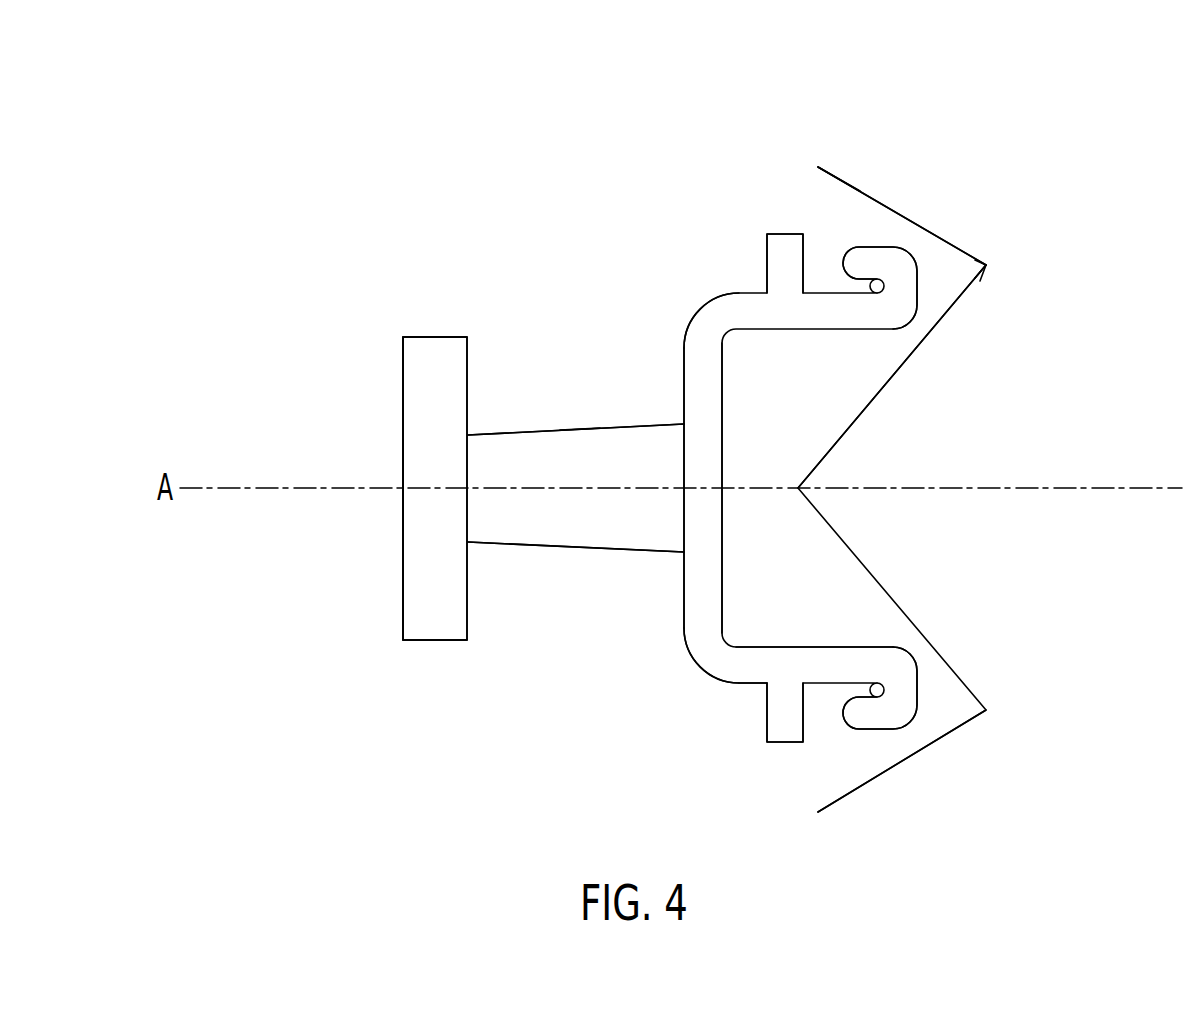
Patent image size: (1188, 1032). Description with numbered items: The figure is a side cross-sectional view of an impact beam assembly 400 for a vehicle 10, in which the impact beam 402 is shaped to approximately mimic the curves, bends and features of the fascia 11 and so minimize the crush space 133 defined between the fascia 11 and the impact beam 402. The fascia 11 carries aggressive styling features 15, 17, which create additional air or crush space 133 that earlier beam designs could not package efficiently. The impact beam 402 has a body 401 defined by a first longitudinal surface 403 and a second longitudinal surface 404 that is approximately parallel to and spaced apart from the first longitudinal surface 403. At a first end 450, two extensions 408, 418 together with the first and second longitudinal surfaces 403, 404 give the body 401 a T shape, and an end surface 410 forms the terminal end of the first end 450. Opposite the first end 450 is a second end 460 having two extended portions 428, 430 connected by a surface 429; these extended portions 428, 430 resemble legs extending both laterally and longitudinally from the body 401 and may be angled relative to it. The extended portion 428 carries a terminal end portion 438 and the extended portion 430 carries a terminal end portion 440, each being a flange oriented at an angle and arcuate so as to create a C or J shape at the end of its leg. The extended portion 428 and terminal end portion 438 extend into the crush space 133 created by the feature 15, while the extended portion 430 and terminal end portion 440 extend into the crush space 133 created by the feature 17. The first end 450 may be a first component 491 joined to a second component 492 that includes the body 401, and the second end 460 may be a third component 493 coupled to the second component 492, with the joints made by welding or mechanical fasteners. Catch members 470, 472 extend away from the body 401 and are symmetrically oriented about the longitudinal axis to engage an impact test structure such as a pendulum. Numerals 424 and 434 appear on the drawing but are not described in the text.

The vehicle 10 is at (1075, 316).
The fascia 11 is at (983, 262).
The feature 15 is at (988, 268).
The feature 17 is at (988, 710).
The crush space 133 is at (943, 268).
The impact beam assembly 400 is at (238, 246).
The body 401 is at (415, 475).
The impact beam 402 is at (487, 312).
The first longitudinal surface 403 is at (505, 430).
The second longitudinal surface 404 is at (572, 587).
The extension 408 is at (437, 337).
The end surface 410 is at (403, 433).
The extension 418 is at (452, 683).
The base wall 424 is at (683, 355).
The extended portion 428 is at (697, 327).
The surface 429 is at (723, 570).
The extended portion 430 is at (712, 680).
The lower arm 434 is at (687, 653).
The terminal end portion 438 is at (855, 260).
The terminal end portion 440 is at (900, 712).
The first end 450 is at (380, 346).
The second end 460 is at (802, 188).
The catch member 470 is at (775, 258).
The catch member 472 is at (787, 742).
The first component 491 is at (433, 188).
The second component 492 is at (571, 258).
The third component 493 is at (868, 104).